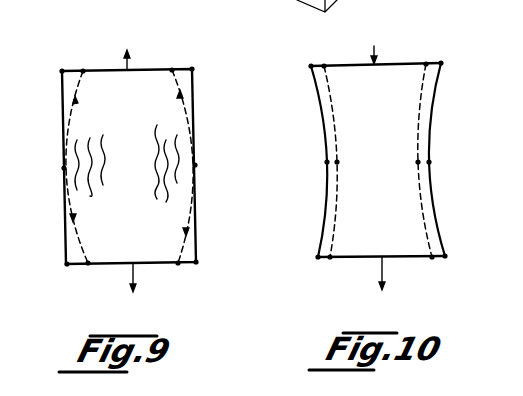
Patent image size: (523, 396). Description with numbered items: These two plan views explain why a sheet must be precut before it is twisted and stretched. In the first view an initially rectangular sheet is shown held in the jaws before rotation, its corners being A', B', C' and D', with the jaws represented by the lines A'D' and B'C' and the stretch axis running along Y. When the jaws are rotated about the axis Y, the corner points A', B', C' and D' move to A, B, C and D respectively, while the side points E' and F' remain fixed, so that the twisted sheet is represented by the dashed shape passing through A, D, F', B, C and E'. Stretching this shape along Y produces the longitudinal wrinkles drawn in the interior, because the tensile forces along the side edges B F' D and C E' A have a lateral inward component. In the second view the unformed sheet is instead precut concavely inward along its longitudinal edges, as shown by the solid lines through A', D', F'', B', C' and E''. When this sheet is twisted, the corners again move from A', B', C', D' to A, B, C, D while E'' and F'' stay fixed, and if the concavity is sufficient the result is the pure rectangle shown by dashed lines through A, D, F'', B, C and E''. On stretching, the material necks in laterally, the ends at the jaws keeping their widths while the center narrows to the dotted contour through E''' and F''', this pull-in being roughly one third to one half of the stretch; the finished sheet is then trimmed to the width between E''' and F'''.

In FIG. 9, the corner point A is at (177, 275).
In FIG. 10, the corner point A is at (432, 270).
In FIG. 9, the initial corner point A' is at (203, 253).
In FIG. 10, the initial corner point A' is at (452, 246).
In FIG. 9, the corner point B is at (85, 61).
In FIG. 10, the corner point B is at (328, 56).
In FIG. 9, the initial corner point B' is at (54, 60).
In FIG. 10, the initial corner point B' is at (304, 54).
In FIG. 9, the corner point C is at (167, 61).
In FIG. 10, the corner point C is at (425, 54).
In FIG. 9, the initial corner point C' is at (197, 58).
In FIG. 10, the initial corner point C' is at (446, 53).
In FIG. 9, the corner point D is at (91, 275).
In FIG. 10, the corner point D is at (327, 270).
In FIG. 9, the initial corner point D' is at (61, 254).
In FIG. 10, the initial corner point D' is at (311, 249).
In FIG. 9, the fixed side point E' is at (202, 160).
In FIG. 9, the fixed side point F' is at (57, 163).
In FIG. 10, the fixed concave edge point E'' is at (439, 157).
In FIG. 10, the necked-in edge point E''' is at (407, 157).
In FIG. 10, the fixed concave edge point F'' is at (318, 157).
In FIG. 10, the necked-in edge point F''' is at (349, 157).
In FIG. 9, the stretch axis Y— Y is at (129, 172).
In FIG. 10, the stretch axis Y— Y is at (376, 168).